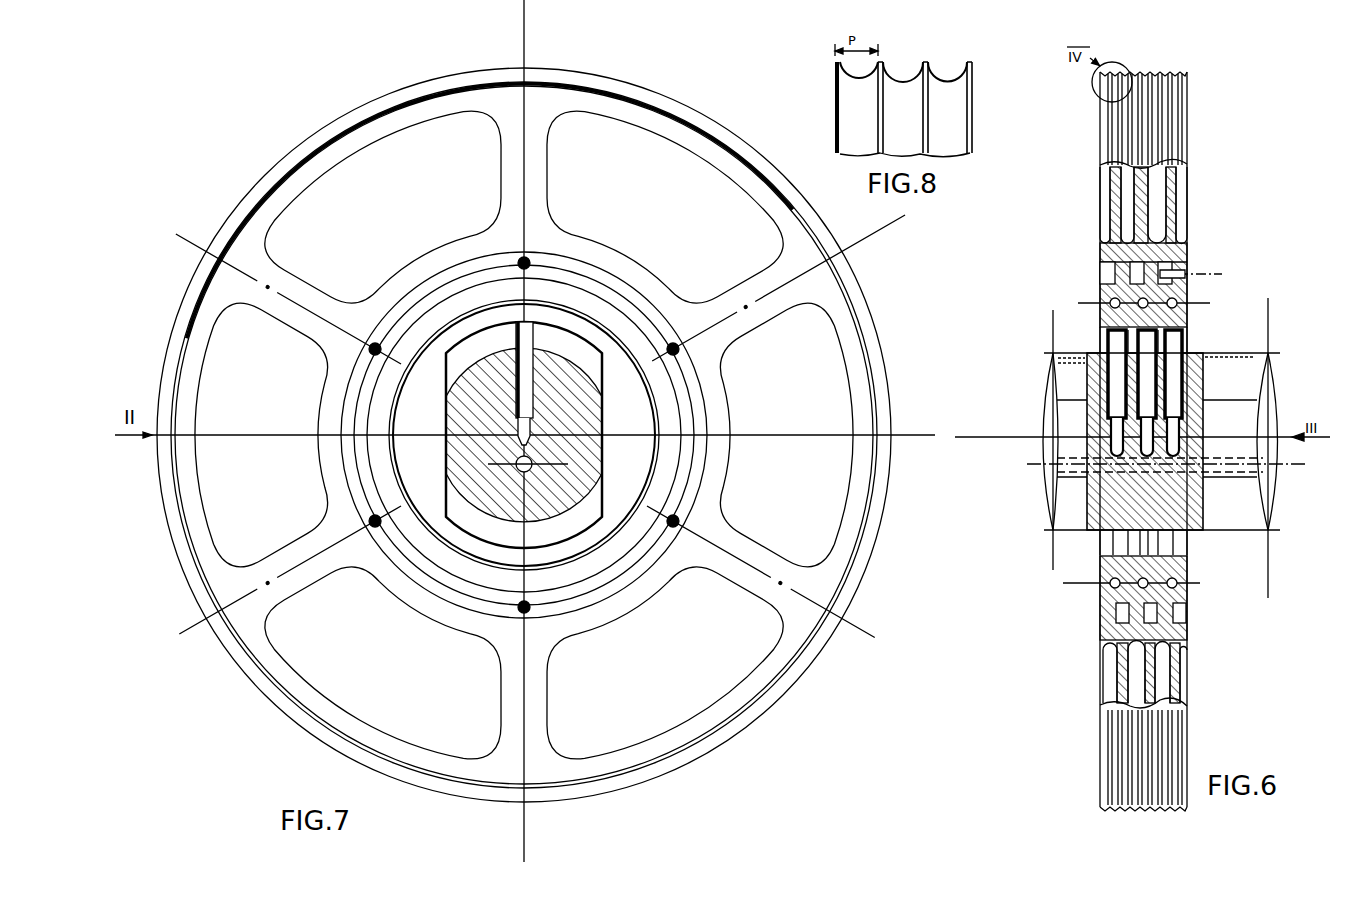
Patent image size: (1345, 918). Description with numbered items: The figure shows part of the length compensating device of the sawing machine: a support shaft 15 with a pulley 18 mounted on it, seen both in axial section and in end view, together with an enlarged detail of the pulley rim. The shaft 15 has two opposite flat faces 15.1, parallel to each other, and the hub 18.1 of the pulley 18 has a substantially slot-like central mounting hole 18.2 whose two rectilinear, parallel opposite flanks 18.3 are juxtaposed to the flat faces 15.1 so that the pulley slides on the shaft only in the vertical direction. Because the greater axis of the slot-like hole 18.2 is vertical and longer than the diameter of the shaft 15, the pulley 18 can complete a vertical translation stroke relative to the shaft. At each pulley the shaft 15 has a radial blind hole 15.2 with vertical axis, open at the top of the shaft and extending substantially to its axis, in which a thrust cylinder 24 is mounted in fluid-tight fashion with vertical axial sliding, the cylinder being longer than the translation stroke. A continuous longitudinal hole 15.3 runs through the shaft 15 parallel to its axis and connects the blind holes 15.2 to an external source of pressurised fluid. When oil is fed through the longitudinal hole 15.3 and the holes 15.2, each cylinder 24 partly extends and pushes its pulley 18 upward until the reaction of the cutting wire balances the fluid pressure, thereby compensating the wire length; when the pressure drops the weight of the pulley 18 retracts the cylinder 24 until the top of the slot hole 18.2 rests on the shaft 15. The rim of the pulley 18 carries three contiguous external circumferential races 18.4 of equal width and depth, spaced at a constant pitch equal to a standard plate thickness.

In FIG. 7, the support shaft 15 is at (483, 522).
In FIG. 6, the support shaft 15 is at (1240, 533).
In FIG. 7, the flat faces 15.1 is at (468, 463).
In FIG. 6, the flat faces 15.1 is at (1052, 413).
In FIG. 7, the blind hole 15.2 is at (531, 433).
In FIG. 6, the blind hole 15.2 is at (1087, 430).
In FIG. 7, the longitudinal hole 15.3 is at (545, 478).
In FIG. 6, the longitudinal hole 15.3 is at (1060, 420).
In FIG. 7, the pulley 18 is at (313, 128).
In FIG. 8, the pulley 18 is at (833, 110).
In FIG. 6, the pulley 18 is at (1098, 140).
In FIG. 7, the hub 18.1 is at (598, 266).
In FIG. 6, the hub 18.1 is at (1098, 255).
In FIG. 7, the slot-like central mounting hole 18.2 is at (468, 352).
In FIG. 6, the slot-like central mounting hole 18.2 is at (1106, 547).
In FIG. 7, the flanks 18.3 is at (446, 374).
In FIG. 8, the circumferential races 18.4 is at (858, 74).
In FIG. 7, the thrust cylinder 24 is at (515, 325).
In FIG. 6, the thrust cylinder 24 is at (1100, 333).